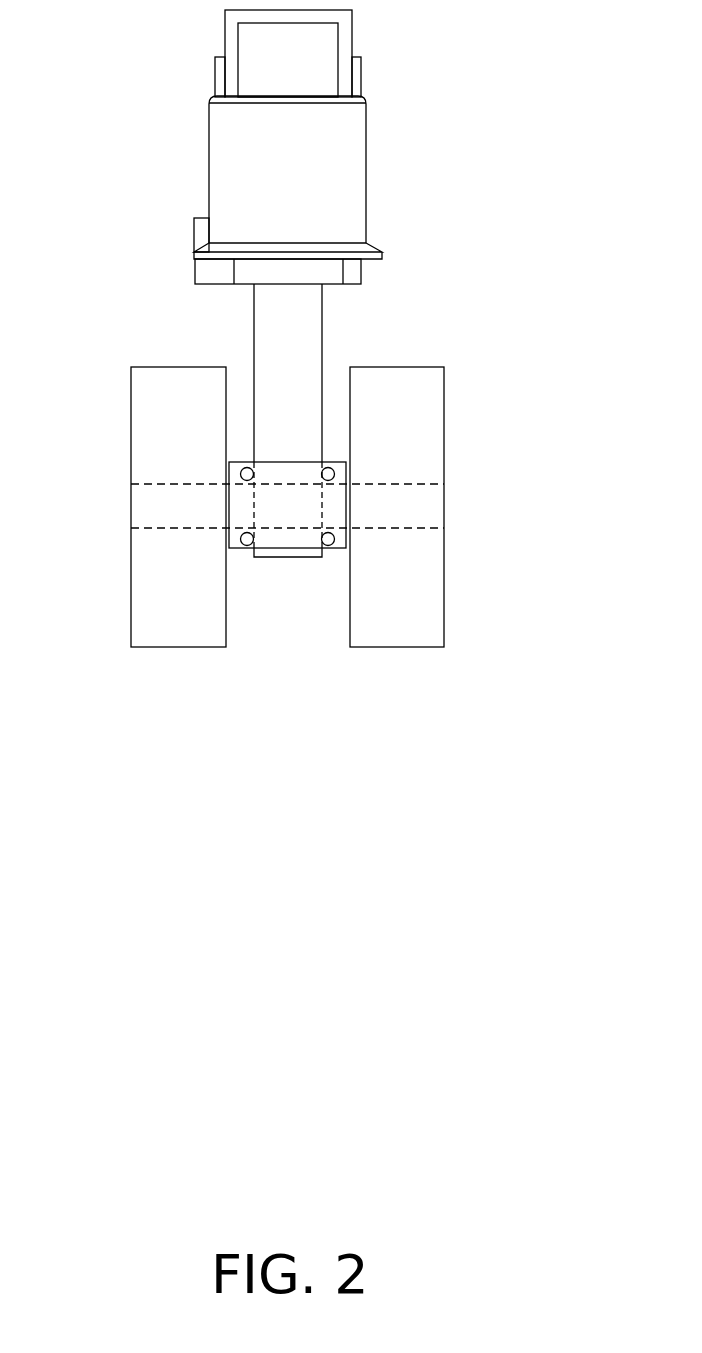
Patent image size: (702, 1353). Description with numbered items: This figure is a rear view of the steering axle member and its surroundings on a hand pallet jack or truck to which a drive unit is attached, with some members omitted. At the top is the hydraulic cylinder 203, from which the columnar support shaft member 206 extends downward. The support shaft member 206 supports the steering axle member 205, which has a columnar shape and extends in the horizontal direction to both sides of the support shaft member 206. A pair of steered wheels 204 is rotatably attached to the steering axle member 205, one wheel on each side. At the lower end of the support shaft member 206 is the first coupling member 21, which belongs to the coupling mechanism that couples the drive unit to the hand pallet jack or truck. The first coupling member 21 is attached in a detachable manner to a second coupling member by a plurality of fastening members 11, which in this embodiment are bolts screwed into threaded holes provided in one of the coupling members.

The hydraulic cylinder 203 is at (353, 168).
The support shaft member 206 is at (323, 330).
The steered wheels 204 is at (444, 397).
The steering axle member 205 is at (167, 528).
The first coupling member 21 is at (303, 550).
The fastening members 11 is at (247, 542).